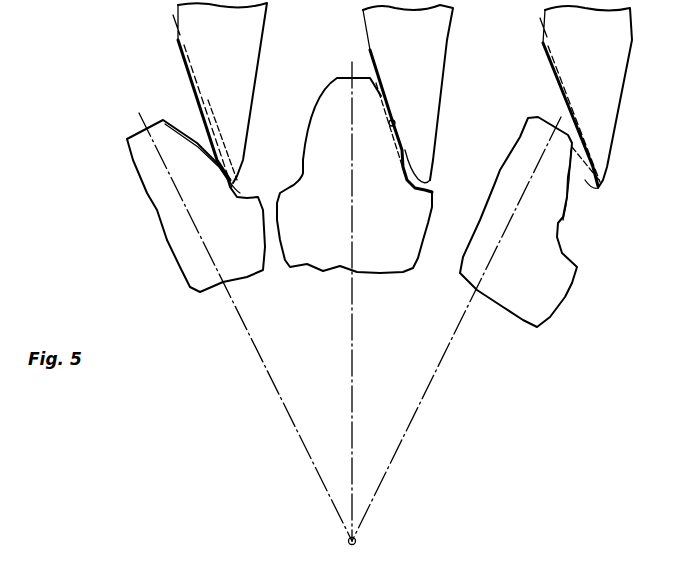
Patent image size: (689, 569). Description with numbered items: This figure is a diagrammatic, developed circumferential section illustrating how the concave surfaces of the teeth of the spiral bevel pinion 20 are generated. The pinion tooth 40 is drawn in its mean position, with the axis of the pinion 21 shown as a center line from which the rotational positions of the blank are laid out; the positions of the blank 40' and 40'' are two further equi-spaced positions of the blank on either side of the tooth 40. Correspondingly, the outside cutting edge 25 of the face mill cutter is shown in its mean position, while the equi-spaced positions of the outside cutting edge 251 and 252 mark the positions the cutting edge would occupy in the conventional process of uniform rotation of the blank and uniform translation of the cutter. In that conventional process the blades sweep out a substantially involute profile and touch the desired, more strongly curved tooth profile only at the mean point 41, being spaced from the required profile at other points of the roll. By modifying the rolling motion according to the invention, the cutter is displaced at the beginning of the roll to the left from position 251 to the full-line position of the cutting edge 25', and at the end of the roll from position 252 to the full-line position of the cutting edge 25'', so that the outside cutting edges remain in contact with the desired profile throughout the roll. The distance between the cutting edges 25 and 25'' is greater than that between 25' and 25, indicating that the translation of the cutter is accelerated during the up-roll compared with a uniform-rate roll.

The spiral bevel pinion 20 is at (325, 258).
The axis of the pinion 21 is at (357, 540).
The outside cutting edge 25 is at (389, 98).
The full-line position of the cutting edge at beginning of roll 25' is at (566, 97).
The full-line position of the cutting edge at end of roll 25'' is at (191, 93).
The equi-spaced position of the outside cutting edge 251 is at (555, 62).
The equi-spaced position of the outside cutting edge 252 is at (202, 87).
The pinion tooth 40 is at (329, 119).
The position of the blank 40' is at (518, 222).
The position of the blank 40'' is at (187, 206).
The mean point 41 is at (389, 126).